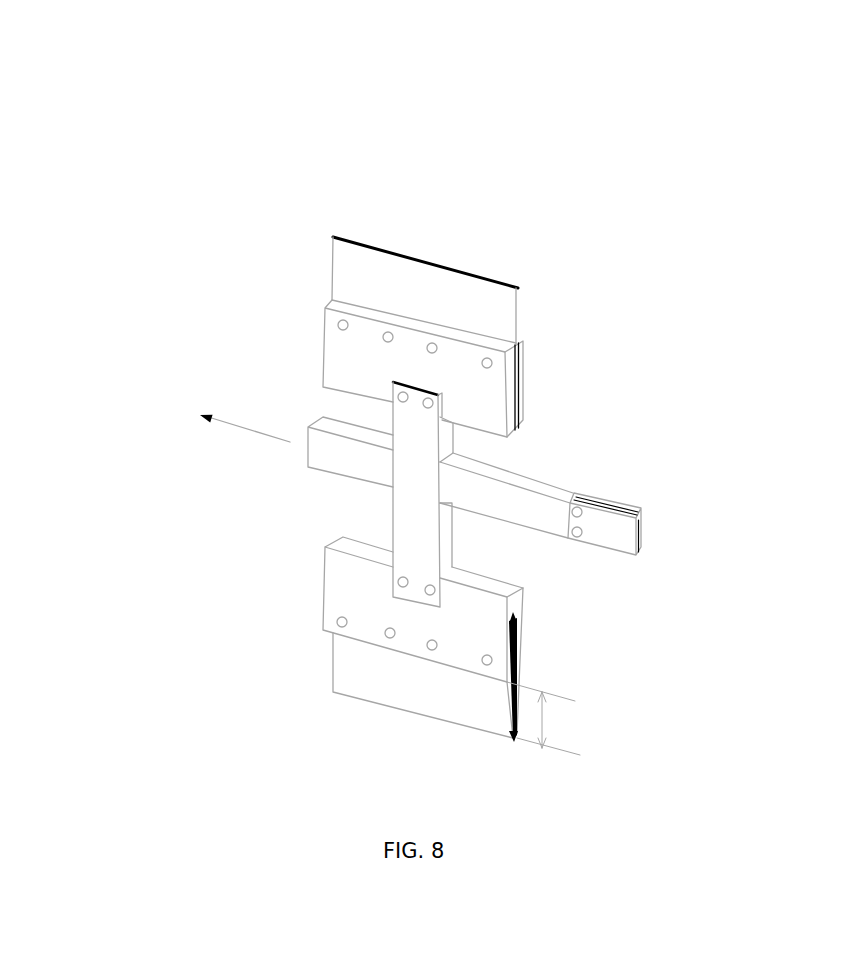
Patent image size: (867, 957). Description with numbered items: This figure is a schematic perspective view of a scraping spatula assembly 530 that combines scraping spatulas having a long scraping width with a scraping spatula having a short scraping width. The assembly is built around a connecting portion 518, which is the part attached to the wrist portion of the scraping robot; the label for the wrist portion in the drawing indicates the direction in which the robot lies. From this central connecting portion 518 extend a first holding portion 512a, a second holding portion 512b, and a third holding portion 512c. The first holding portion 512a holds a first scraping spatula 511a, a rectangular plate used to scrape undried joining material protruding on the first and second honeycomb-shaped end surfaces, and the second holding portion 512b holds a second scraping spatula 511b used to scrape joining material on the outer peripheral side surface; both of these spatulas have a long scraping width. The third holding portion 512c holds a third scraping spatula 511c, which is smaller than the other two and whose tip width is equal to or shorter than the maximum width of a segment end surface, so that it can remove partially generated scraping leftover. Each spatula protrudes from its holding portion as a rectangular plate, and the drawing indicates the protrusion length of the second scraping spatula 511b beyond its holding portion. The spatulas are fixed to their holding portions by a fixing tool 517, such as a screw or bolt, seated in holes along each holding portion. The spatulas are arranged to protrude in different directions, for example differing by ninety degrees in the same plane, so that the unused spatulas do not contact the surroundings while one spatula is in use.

The scraping spatula assembly 530 is at (355, 173).
The first scraping spatula 511a is at (472, 273).
The second scraping spatula 511b is at (430, 715).
The third scraping spatula 511c is at (638, 537).
The first holding portion 512a is at (527, 407).
The second holding portion 512b is at (323, 569).
The third holding portion 512c is at (548, 485).
The fixing tool 517 is at (338, 320).
The connecting portion 518 is at (307, 450).